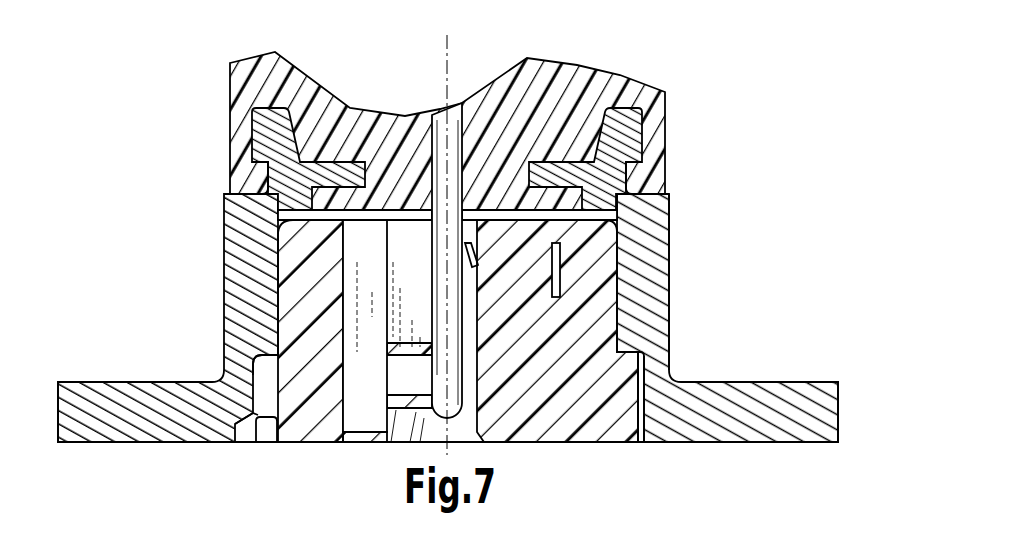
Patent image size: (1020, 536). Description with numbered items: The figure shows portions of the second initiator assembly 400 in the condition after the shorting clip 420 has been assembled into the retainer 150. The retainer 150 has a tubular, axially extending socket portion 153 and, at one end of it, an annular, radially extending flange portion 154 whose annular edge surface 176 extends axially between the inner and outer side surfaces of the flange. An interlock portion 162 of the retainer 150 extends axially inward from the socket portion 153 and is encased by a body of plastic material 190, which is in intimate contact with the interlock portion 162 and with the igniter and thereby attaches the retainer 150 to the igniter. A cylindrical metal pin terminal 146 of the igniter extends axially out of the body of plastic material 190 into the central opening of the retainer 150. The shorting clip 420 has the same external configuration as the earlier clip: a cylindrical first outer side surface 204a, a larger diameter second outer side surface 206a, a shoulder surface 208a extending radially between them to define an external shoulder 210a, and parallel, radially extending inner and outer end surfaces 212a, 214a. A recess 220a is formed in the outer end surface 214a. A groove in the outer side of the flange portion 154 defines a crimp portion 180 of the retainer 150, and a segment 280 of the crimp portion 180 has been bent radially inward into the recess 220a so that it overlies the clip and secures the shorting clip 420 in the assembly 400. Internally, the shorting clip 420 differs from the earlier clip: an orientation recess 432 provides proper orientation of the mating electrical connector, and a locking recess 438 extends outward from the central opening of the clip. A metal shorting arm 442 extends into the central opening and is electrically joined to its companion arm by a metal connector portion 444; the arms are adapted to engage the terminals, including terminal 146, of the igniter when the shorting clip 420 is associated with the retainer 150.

The initiator assembly 400 is at (124, 108).
The terminal 146 is at (441, 119).
The inner end surface 212a is at (503, 207).
The body of plastic material 190 is at (603, 82).
The interlock portion 162 is at (621, 140).
The retainer 150 is at (676, 203).
The shorting arm 442 is at (470, 253).
The metal connector portion 444 is at (558, 250).
The socket portion 153 is at (671, 258).
The orientation recess 432 is at (368, 288).
The first outer side surface 204a is at (619, 297).
The external shoulder 210a is at (262, 348).
The shoulder surface 208a is at (628, 352).
The flange portion 154 is at (775, 381).
The annular edge surface 176 is at (58, 410).
The segment of crimp portion 280 is at (257, 418).
The recess 220a is at (267, 433).
The locking recess 438 is at (403, 382).
The outer end surface 214a is at (530, 446).
The shorting clip 420 is at (593, 450).
The crimp portion 180 is at (657, 448).
The second outer side surface 206a is at (645, 398).